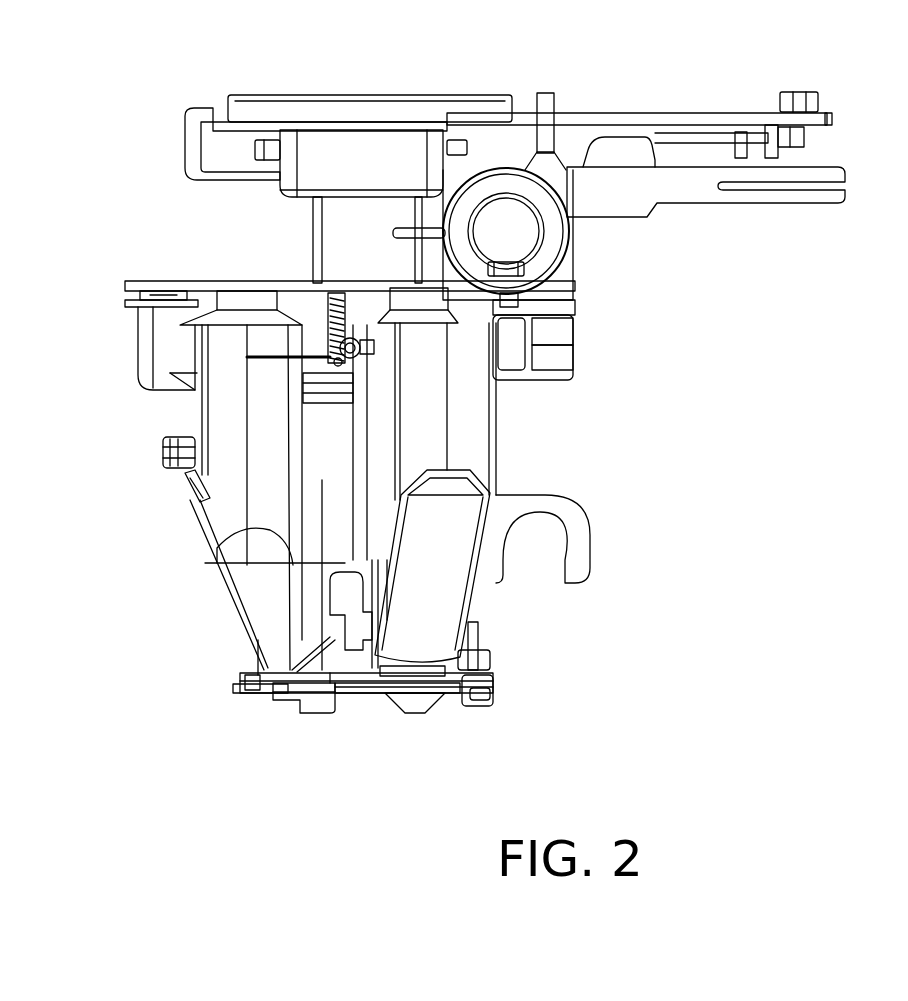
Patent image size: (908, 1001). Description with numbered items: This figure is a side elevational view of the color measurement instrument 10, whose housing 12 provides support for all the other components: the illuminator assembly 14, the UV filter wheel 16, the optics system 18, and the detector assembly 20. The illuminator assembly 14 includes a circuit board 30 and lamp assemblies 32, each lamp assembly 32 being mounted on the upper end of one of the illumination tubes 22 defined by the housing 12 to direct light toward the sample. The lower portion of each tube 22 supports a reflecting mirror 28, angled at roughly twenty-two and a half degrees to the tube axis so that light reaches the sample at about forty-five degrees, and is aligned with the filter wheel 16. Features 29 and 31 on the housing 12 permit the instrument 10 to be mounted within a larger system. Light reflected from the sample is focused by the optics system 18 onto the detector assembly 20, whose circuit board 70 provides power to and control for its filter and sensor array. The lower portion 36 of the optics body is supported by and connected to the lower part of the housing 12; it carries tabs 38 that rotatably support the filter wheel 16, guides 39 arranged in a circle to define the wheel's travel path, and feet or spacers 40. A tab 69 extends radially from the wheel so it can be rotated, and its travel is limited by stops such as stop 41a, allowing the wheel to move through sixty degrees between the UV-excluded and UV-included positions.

The color measurement instrument 10 is at (740, 411).
The housing 12 is at (498, 460).
The illuminator assembly 14 is at (198, 280).
The UV filter wheel 16 is at (297, 710).
The optics system 18 is at (335, 492).
The detector assembly 20 is at (568, 104).
The illumination tube 22 is at (220, 418).
The reflecting mirror 28 is at (427, 578).
The mounting feature 29 is at (548, 236).
The circuit board 30 is at (303, 276).
The mounting feature 31 is at (528, 340).
The lamp assembly 32 is at (230, 294).
The lower portion of the optics body 36 is at (330, 658).
The tab 38 is at (318, 710).
The guide 39 is at (368, 692).
The foot or spacer 40 is at (413, 705).
The stop 41a is at (270, 695).
The tab 69 is at (240, 690).
The circuit board 70 is at (660, 118).